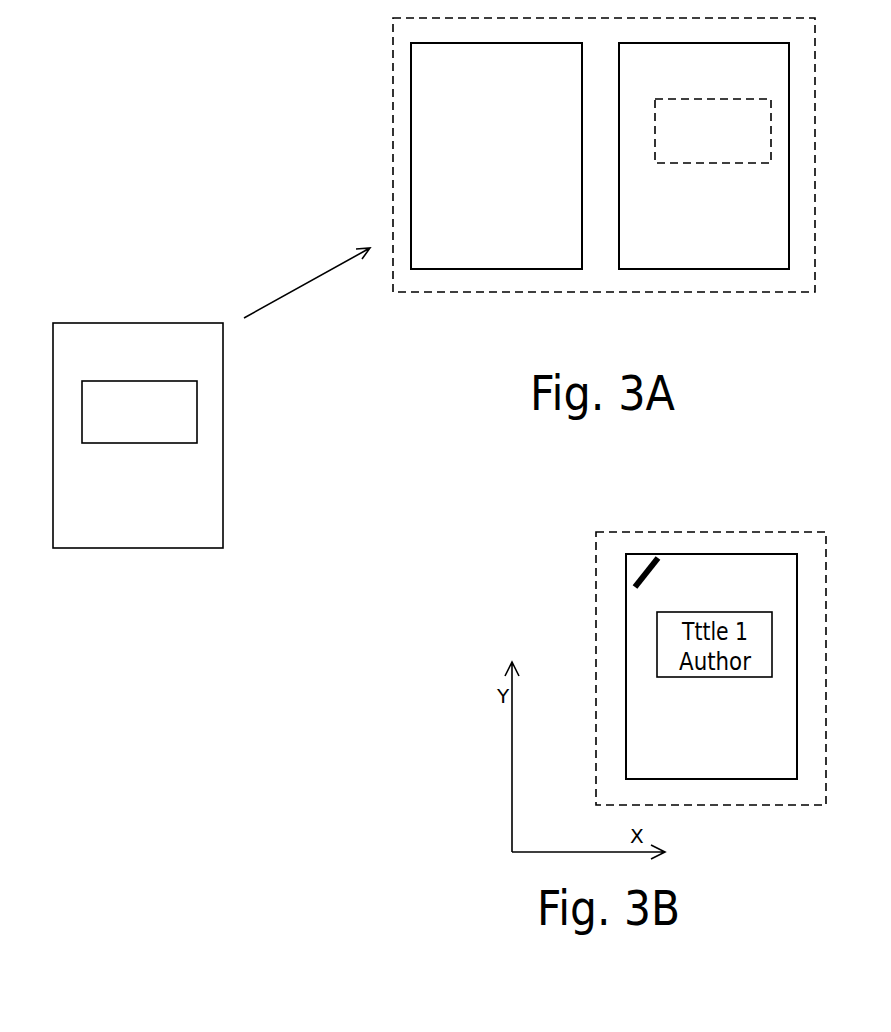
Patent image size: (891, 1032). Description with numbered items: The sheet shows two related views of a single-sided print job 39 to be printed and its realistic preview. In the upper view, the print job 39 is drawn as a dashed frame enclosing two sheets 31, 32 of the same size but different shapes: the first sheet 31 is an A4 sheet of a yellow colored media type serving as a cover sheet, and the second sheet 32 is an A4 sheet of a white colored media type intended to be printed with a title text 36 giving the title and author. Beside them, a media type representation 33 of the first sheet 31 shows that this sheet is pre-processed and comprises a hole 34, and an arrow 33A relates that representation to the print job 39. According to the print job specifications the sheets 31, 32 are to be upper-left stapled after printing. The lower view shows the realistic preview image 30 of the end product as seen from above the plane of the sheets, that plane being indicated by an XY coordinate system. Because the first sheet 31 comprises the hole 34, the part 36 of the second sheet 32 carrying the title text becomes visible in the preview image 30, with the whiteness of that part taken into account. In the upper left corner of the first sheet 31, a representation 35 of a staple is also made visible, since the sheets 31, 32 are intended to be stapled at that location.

In FIG. 3B, the realistic preview image 30 is at (783, 805).
In FIG. 3A, the first sheet 31 is at (411, 102).
In FIG. 3A, the second sheet 32 is at (789, 226).
In FIG. 3A, the media type representation 33 is at (223, 497).
In FIG. 3A, the enlargement indicator arrow 33A is at (313, 277).
In FIG. 3A, the hole 34 is at (165, 410).
In FIG. 3B, the representation of a staple 35 is at (635, 560).
In FIG. 3A, the title text 36 is at (771, 131).
In FIG. 3A, the print job 39 is at (777, 292).